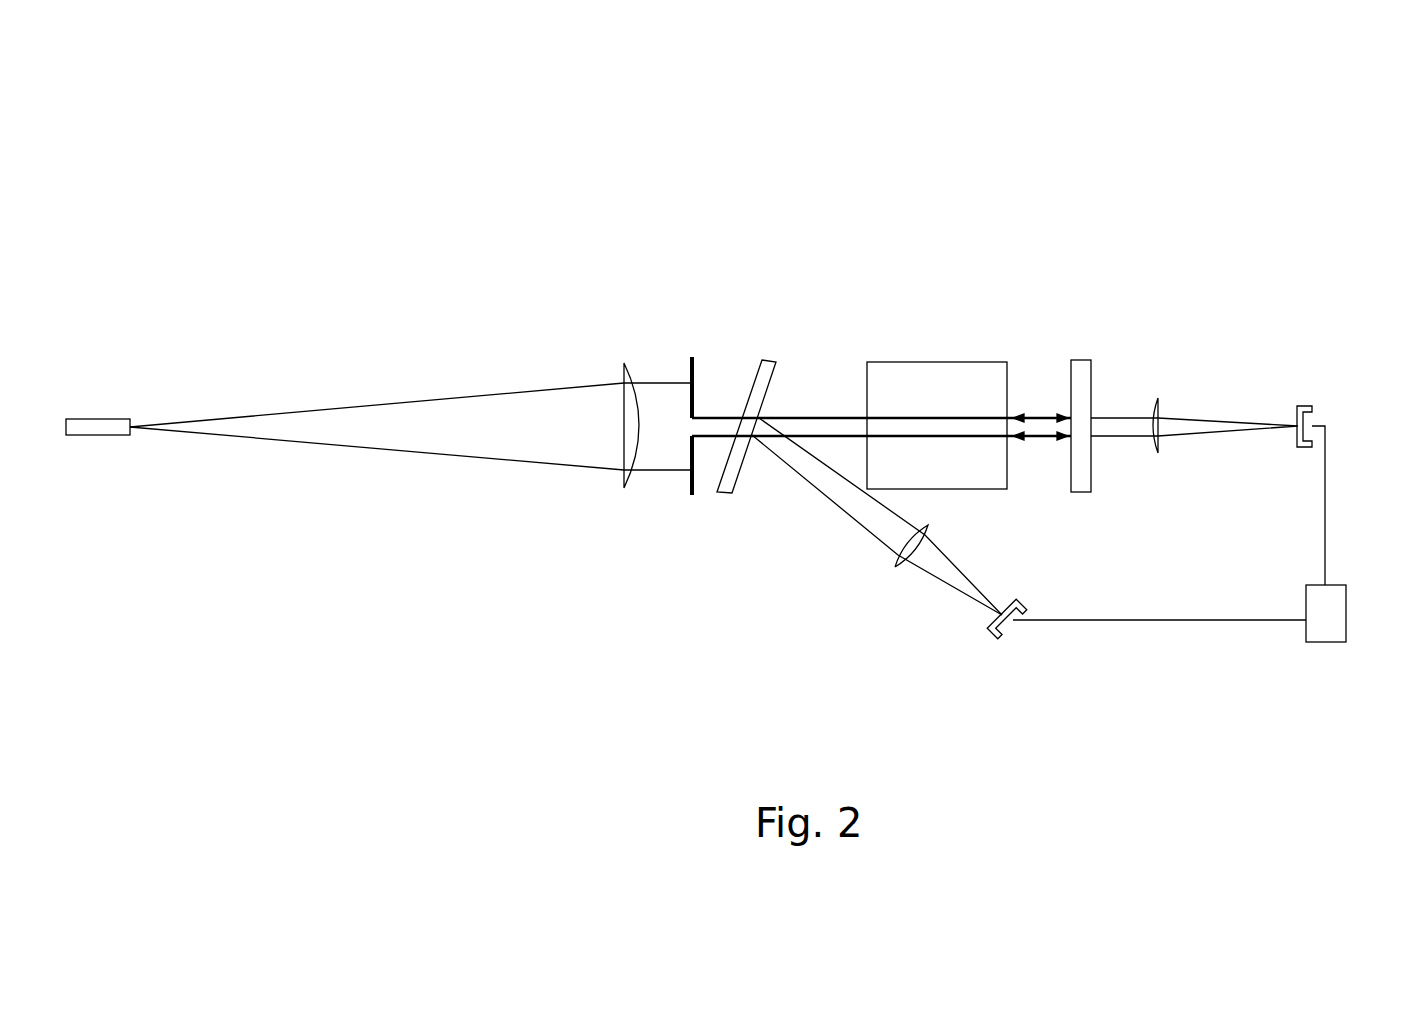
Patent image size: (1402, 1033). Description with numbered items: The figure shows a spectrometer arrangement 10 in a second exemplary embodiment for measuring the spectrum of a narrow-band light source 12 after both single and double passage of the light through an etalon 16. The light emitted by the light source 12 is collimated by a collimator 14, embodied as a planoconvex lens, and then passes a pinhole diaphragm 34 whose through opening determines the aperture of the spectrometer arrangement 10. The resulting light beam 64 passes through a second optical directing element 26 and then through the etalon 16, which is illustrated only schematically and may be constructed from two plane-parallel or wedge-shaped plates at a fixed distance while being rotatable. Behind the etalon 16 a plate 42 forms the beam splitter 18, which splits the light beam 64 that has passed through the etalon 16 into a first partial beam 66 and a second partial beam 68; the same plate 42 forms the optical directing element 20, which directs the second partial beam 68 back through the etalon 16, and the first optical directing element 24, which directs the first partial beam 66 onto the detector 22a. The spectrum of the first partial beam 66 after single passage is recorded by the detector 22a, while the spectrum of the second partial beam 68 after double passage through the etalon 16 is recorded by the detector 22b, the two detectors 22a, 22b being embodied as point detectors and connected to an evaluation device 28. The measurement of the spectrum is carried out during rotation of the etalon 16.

The spectrometer arrangement 10 is at (876, 168).
The light source 12 is at (96, 427).
The collimator 14 is at (623, 347).
The etalon 16 is at (934, 311).
The beam splitter 18 is at (1062, 396).
The optical directing element 20 is at (1062, 396).
The detector 22a is at (1331, 407).
The detector 22b is at (998, 654).
The first optical directing element 24 is at (1062, 396).
The second optical directing element 26 is at (783, 342).
The evaluation device 28 is at (1323, 628).
The pinhole diaphragm 34 is at (695, 368).
The plate 42 is at (1079, 346).
The light beam 64 is at (428, 453).
The first partial beam 66 is at (1113, 425).
The second partial beam 68 is at (831, 490).